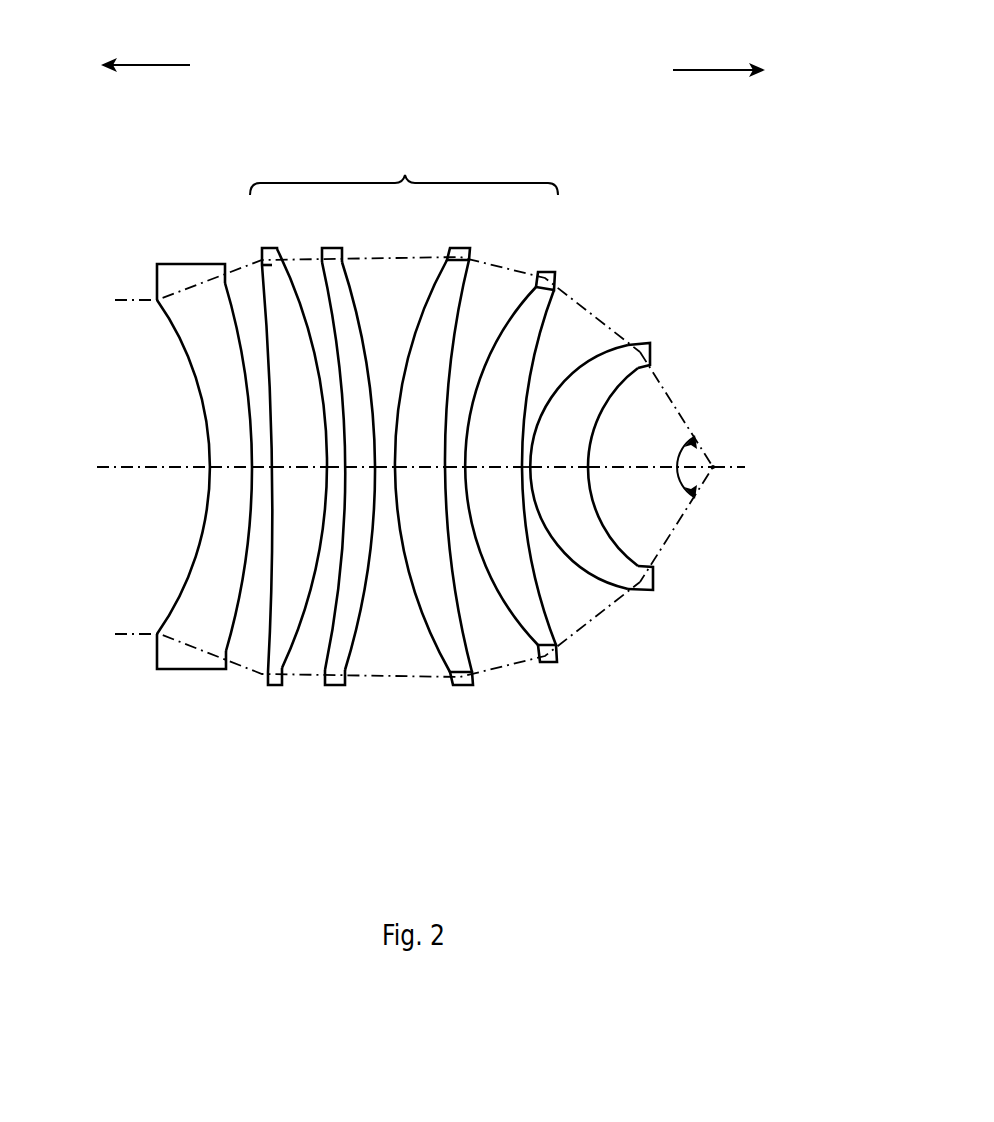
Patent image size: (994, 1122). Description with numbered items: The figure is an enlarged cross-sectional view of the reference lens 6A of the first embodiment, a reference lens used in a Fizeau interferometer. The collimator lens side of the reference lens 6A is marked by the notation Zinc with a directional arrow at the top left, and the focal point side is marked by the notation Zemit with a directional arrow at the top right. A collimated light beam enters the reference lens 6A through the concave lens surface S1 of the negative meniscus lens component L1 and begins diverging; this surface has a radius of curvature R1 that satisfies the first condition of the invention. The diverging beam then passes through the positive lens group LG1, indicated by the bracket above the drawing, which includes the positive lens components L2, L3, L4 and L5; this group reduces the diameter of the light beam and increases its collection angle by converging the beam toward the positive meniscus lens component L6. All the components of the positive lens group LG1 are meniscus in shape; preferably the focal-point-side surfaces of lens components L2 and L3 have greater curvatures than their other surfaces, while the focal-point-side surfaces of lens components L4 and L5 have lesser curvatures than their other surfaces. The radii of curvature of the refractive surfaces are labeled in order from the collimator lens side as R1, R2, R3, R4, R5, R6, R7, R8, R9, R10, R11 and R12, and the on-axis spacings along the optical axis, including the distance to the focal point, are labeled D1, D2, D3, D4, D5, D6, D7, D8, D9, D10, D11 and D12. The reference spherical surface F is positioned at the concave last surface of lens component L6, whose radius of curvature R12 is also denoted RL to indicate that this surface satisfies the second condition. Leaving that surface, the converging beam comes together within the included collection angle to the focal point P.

The reference lens 6A is at (663, 223).
The positive lens group LG1 is at (397, 451).
The negative meniscus lens component L1 is at (192, 472).
The positive lens component L2 is at (282, 475).
The positive lens component L3 is at (341, 475).
The positive lens component L4 is at (448, 471).
The positive lens component L5 is at (532, 477).
The positive meniscus lens component L6 is at (670, 488).
The radius of curvature R1 is at (160, 632).
The radius of curvature R2 is at (232, 650).
The radius of curvature R3 is at (270, 662).
The radius of curvature R4 is at (280, 658).
The radius of curvature R5 is at (338, 664).
The radius of curvature R6 is at (347, 660).
The radius of curvature R7 is at (436, 666).
The radius of curvature R8 is at (473, 660).
The radius of curvature R9 is at (522, 646).
The radius of curvature R10 is at (560, 636).
The radius of curvature R11 is at (616, 594).
The radius of curvature R12 is at (648, 565).
The lens surface satisfying Condition (2) RL is at (641, 523).
The reference spherical surface F is at (699, 523).
The concave lens surface S1 is at (182, 472).
The focal point P is at (714, 466).
The on-axis surface spacing D1 is at (231, 449).
The on-axis surface spacing D2 is at (263, 470).
The on-axis surface spacing D3 is at (299, 449).
The on-axis surface spacing D4 is at (336, 470).
The on-axis surface spacing D5 is at (360, 449).
The on-axis surface spacing D6 is at (386, 470).
The on-axis surface spacing D7 is at (420, 449).
The on-axis surface spacing D8 is at (455, 470).
The on-axis surface spacing D9 is at (493, 450).
The on-axis surface spacing D10 is at (524, 470).
The on-axis surface spacing D11 is at (559, 450).
The on-axis surface spacing D12 is at (650, 450).
The collimator lens side notation Zinc is at (161, 65).
The focal point side notation Zemit is at (706, 70).